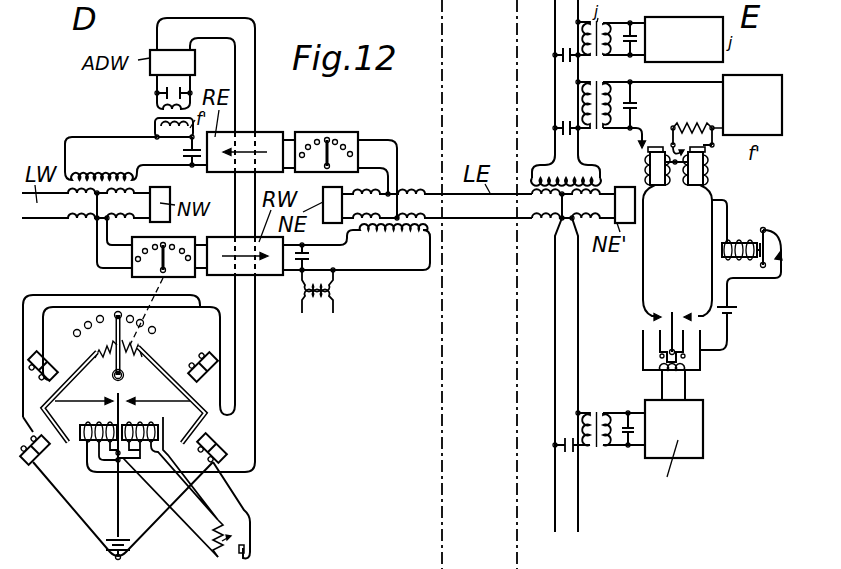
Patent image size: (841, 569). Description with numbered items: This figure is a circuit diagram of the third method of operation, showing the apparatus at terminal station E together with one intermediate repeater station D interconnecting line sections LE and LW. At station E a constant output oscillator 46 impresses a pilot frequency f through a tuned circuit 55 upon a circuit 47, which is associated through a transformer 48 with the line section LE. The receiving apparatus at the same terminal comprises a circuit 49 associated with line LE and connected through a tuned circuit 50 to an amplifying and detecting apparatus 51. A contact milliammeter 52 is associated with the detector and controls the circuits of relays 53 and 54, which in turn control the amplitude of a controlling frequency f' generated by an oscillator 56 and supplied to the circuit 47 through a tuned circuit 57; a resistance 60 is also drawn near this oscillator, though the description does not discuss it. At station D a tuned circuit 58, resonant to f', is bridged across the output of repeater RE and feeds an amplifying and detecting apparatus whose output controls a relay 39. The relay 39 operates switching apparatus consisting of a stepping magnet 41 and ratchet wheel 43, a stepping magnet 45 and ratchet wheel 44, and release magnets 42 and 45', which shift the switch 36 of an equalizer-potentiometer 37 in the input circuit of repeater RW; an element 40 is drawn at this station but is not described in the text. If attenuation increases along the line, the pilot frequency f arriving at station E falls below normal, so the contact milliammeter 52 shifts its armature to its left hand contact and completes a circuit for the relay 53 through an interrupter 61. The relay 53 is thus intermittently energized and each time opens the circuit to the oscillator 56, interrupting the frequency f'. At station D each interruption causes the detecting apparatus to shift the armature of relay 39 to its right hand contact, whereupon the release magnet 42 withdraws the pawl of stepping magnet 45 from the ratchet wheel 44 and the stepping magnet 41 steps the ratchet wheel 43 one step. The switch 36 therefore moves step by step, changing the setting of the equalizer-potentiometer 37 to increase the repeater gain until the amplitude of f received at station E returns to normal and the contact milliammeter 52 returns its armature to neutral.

The switch 36 is at (110, 330).
The equalizer-potentiometer 37 is at (185, 240).
The relay 39 is at (146, 441).
The resistance 40 is at (250, 531).
The stepping magnet 41 is at (42, 453).
The release magnet 42 is at (218, 370).
The ratchet wheel 43 is at (110, 372).
The ratchet wheel 44 is at (138, 340).
The stepping magnet 45 is at (222, 450).
The release magnet 45' is at (40, 375).
The constant output oscillator 46 is at (681, 28).
The circuit 47 is at (557, 103).
The transformer 48 is at (560, 176).
The circuit 49 is at (572, 380).
The tuned circuit 50 is at (596, 448).
The amplifying and detecting apparatus 51 is at (703, 433).
The contact milliammeter 52 is at (704, 360).
The relay 53 is at (650, 175).
The relay 54 is at (703, 172).
The tuned circuit 55 is at (598, 56).
The oscillator 56 is at (758, 80).
The tuned circuit 57 is at (596, 129).
The tuned circuit 58 is at (155, 128).
The resistance 60 is at (688, 127).
The interrupter 61 is at (739, 243).